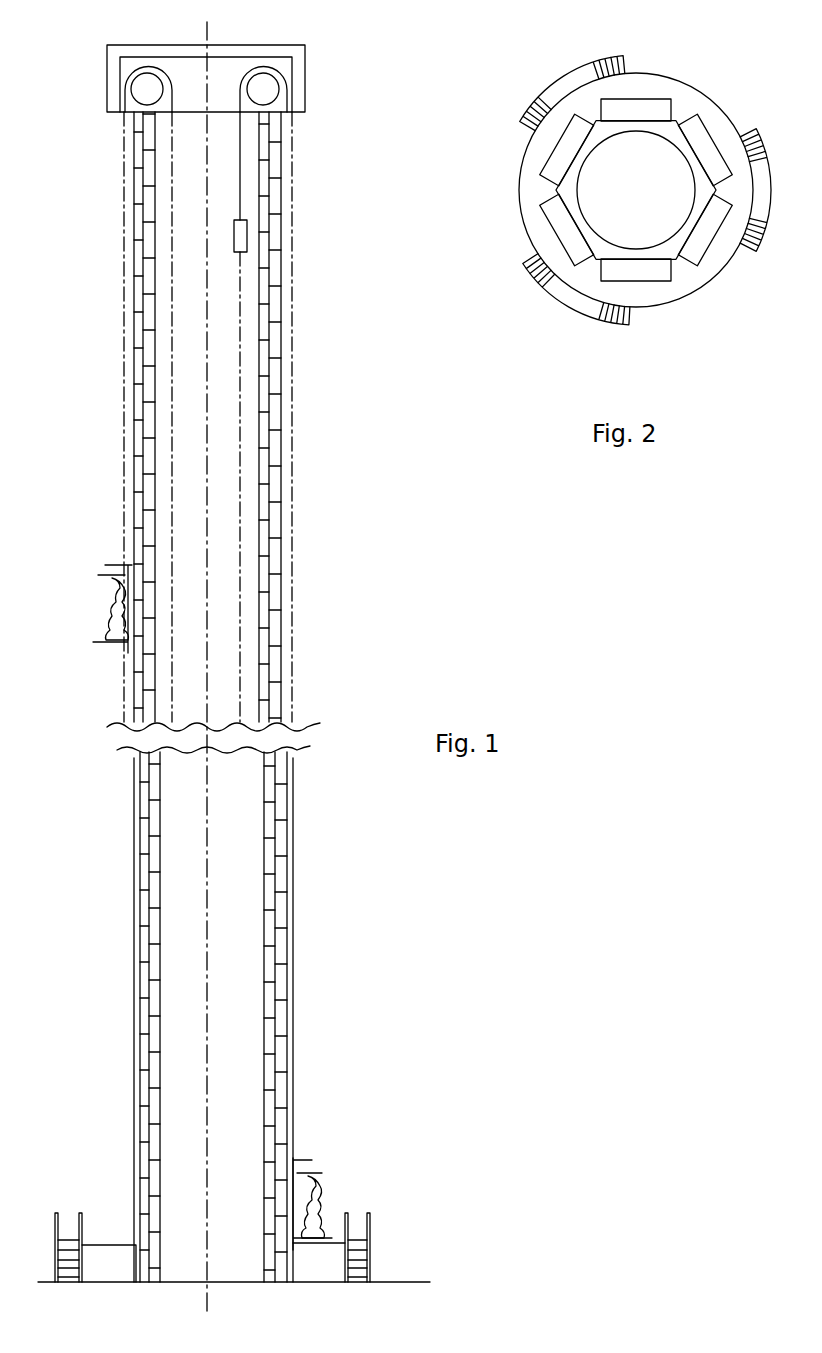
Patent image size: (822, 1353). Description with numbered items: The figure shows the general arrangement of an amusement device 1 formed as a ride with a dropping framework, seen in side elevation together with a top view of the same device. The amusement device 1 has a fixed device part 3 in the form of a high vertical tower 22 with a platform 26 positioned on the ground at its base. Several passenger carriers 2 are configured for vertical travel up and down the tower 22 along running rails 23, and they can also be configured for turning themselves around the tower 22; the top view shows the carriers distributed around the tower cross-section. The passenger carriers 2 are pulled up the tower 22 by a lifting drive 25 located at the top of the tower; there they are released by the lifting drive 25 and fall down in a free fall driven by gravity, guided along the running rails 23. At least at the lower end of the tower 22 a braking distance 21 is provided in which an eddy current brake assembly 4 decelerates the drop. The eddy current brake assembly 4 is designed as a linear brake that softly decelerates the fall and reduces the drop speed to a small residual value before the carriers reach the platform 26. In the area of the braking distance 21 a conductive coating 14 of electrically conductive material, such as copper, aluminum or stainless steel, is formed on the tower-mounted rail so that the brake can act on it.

In FIG. 1, the amusement device 1 is at (326, 207).
In FIG. 1, the passenger carrier 2 is at (101, 575).
In FIG. 2, the passenger carrier 2 is at (548, 214).
In FIG. 1, the fixed device part 3 is at (276, 46).
In FIG. 2, the fixed device part 3 is at (680, 123).
In FIG. 1, the eddy current brake assembly 4 is at (113, 940).
In FIG. 1, the conductive coating 14 is at (135, 1062).
In FIG. 1, the braking distance 21 is at (313, 766).
In FIG. 1, the tower 22 is at (246, 531).
In FIG. 1, the running rails 23 is at (270, 386).
In FIG. 1, the lifting drive 25 is at (127, 94).
In FIG. 1, the platform 26 is at (108, 1246).
In FIG. 2, the platform 26 is at (694, 281).